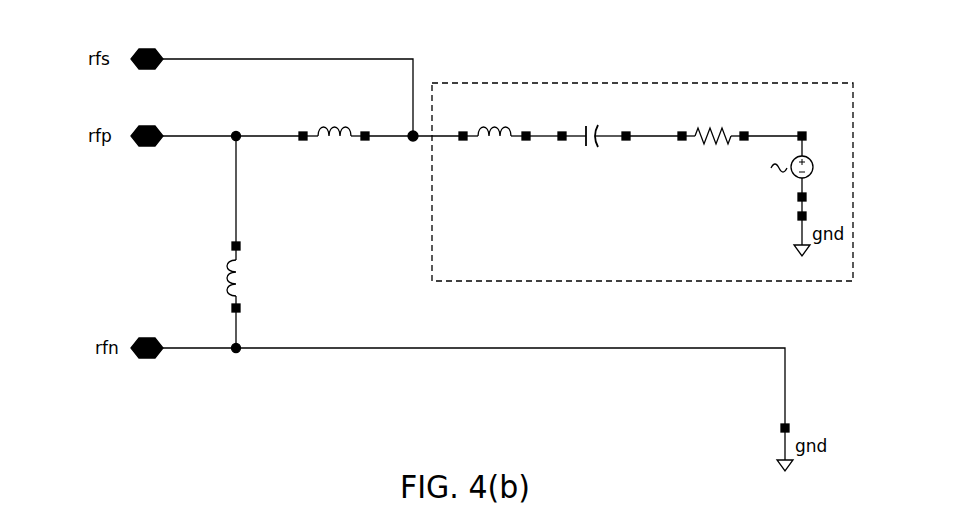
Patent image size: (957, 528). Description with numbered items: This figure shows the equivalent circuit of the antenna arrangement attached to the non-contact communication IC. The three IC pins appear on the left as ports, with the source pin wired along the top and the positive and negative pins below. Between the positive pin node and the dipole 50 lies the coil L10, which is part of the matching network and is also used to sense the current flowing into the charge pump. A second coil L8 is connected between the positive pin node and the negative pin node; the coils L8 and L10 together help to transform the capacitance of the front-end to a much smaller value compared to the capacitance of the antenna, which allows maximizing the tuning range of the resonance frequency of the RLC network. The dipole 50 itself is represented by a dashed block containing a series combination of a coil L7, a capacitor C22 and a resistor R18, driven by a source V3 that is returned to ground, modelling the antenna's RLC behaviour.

The dipole 50 is at (492, 245).
The coil L10 is at (334, 112).
The inductor L7 is at (494, 118).
The capacitor C22 is at (592, 120).
The resistor R18 is at (713, 160).
The voltage source V3 is at (804, 191).
The coil L8 is at (214, 277).